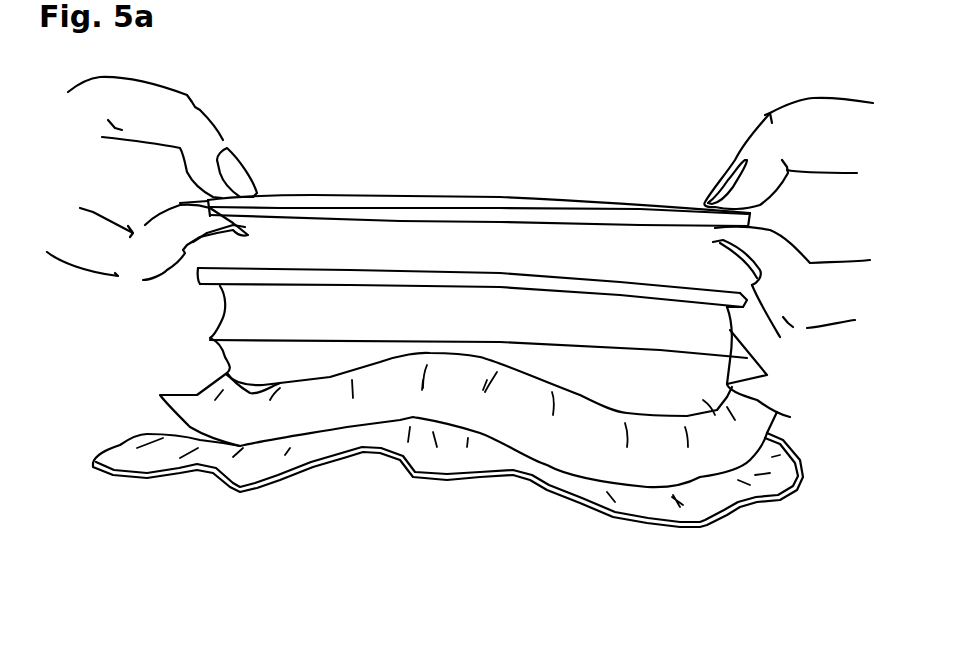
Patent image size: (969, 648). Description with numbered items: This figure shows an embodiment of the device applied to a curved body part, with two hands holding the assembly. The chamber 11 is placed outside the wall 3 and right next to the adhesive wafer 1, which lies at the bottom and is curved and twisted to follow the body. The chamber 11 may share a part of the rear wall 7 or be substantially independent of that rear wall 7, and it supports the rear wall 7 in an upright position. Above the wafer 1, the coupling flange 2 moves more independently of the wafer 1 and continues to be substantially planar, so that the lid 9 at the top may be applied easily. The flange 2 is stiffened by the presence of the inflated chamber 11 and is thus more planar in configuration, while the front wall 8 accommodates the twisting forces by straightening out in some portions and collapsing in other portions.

The adhesive wafer 1 is at (700, 498).
The coupling flange 2 is at (745, 295).
The wall 3 is at (760, 364).
The rear wall 7 is at (235, 360).
The front wall 8 is at (240, 318).
The lid 9 is at (618, 205).
The chamber 11 is at (770, 430).